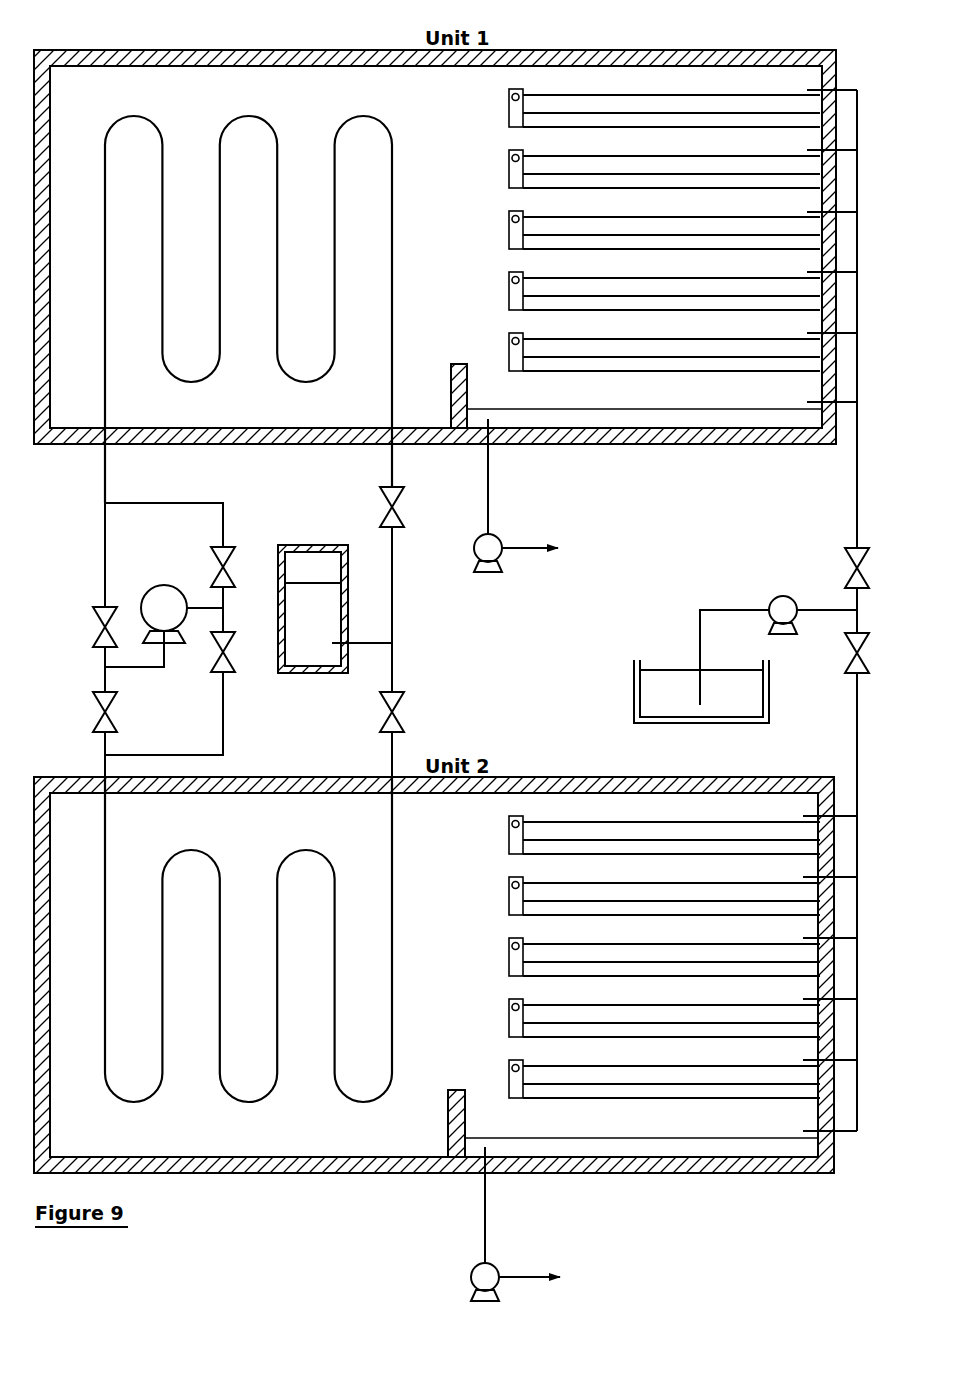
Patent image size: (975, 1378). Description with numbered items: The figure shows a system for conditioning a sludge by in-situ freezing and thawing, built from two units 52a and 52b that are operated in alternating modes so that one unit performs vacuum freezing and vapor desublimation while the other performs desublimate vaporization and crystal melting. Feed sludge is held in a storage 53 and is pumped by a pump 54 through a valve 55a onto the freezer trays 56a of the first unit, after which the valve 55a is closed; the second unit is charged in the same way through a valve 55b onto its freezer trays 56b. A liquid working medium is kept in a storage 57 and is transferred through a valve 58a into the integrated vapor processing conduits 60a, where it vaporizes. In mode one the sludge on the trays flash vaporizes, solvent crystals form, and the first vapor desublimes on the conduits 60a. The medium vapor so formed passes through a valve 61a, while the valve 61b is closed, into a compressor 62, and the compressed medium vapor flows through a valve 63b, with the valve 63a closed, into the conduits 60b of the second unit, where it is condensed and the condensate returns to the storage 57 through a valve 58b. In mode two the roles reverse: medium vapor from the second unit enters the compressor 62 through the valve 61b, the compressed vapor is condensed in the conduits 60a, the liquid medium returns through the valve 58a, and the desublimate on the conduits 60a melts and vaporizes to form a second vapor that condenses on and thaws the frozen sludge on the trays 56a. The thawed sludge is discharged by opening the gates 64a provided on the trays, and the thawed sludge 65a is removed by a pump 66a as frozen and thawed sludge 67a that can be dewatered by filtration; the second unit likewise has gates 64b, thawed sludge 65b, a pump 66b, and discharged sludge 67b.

The first unit 52a is at (467, 117).
The second unit 52b is at (467, 845).
The storage 53 is at (681, 705).
The pump 54 is at (787, 598).
The valve 55a is at (846, 570).
The valve 55b is at (846, 655).
The freezer trays 56a is at (692, 228).
The freezer trays 56b is at (678, 955).
The medium storage 57 is at (325, 635).
The valve 58a is at (379, 508).
The valve 58b is at (379, 713).
The integrated vapor processing conduits 60a is at (333, 197).
The vapor processing conduits 60b is at (330, 914).
The valve 61a is at (92, 625).
The valve 61b is at (92, 710).
The compressor 62 is at (171, 598).
The valve 63a is at (240, 566).
The valve 63b is at (240, 651).
The gates 64a is at (503, 230).
The gates 64b is at (508, 960).
The thawed sludge 65a is at (647, 418).
The thawed sludge 65b is at (617, 1148).
The pump 66a is at (488, 572).
The pump 66b is at (471, 1277).
The frozen and thawed sludge 67a is at (553, 548).
The frozen and thawed sludge 67b is at (552, 1277).